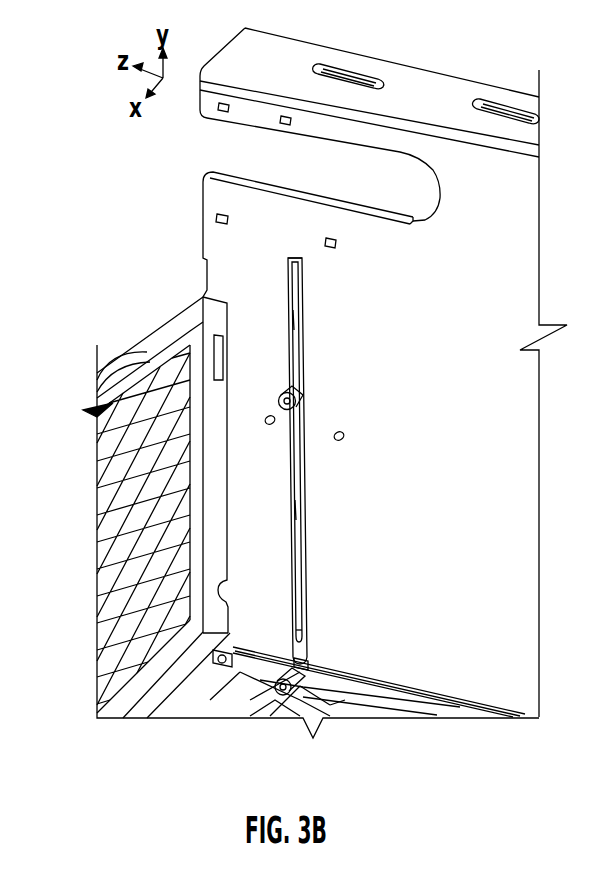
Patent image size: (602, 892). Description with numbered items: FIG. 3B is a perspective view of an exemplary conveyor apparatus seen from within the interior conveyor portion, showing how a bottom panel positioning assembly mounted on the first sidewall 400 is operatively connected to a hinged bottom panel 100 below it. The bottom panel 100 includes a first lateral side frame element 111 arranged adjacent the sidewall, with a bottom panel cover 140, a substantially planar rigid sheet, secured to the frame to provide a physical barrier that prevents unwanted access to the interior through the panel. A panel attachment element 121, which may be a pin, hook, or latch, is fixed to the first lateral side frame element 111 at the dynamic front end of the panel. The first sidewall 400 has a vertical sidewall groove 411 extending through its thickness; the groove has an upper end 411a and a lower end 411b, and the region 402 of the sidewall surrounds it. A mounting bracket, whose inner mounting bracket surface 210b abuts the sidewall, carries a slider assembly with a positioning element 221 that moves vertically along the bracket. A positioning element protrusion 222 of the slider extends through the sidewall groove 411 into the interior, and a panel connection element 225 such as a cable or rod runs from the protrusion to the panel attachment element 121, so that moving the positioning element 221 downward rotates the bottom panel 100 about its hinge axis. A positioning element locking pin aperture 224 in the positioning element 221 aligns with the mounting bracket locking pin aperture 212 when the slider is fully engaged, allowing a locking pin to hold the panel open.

The bottom panel 100 is at (342, 703).
The first lateral side frame element 111 is at (430, 693).
The panel attachment element 121 is at (320, 685).
The bottom panel cover 140 is at (215, 707).
The inner mounting bracket surface 210b is at (306, 640).
The mounting bracket locking pin aperture 212 is at (308, 663).
The positioning element 221 is at (298, 350).
The positioning element protrusion 222 is at (283, 390).
The positioning element locking pin aperture 224 is at (305, 450).
The panel connection element 225 is at (283, 428).
The first sidewall 400 is at (520, 198).
The bracket plate 402 is at (455, 405).
The sidewall groove 411 is at (308, 572).
The upper end of slot 411a is at (282, 268).
The lower end of slot 411b is at (285, 651).